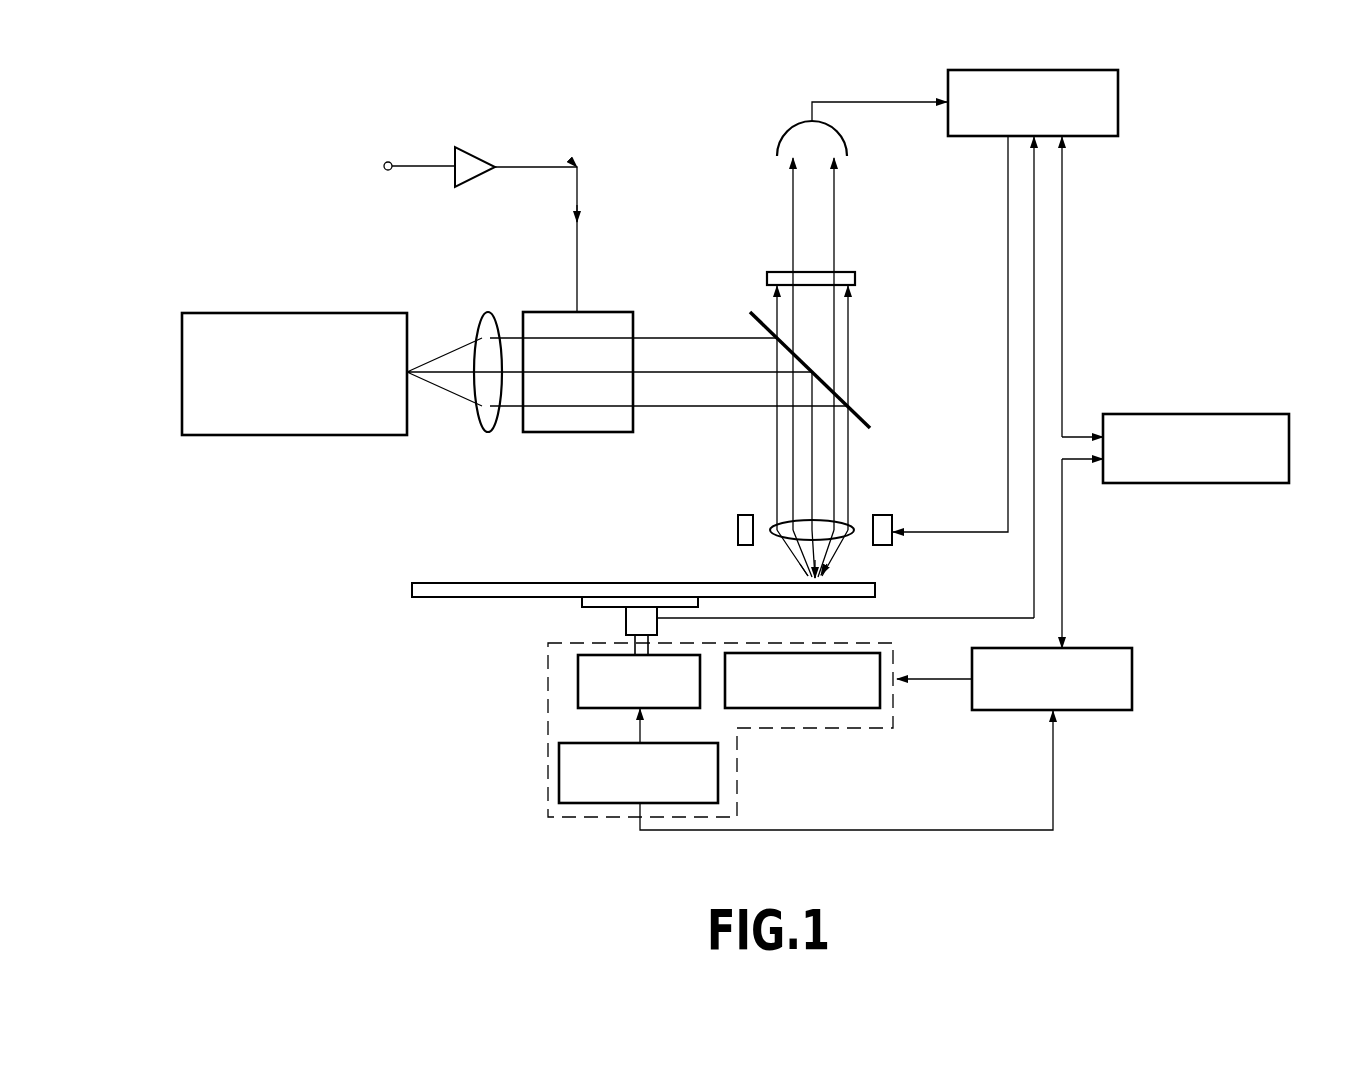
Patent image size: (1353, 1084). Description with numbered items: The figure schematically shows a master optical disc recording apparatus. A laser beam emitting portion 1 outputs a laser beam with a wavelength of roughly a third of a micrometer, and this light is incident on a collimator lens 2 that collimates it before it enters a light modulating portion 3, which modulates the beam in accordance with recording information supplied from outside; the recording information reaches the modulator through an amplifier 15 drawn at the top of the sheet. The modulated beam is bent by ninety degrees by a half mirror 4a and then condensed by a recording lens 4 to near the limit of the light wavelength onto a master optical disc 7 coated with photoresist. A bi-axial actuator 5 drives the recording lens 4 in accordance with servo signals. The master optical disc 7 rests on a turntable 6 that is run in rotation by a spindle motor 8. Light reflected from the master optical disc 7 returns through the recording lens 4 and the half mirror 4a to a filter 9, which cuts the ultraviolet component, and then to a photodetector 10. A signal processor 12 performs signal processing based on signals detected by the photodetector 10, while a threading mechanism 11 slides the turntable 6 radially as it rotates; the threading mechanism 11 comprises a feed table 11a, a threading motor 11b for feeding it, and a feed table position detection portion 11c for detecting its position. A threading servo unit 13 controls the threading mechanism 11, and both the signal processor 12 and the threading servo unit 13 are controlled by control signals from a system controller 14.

The laser beam emitting portion 1 is at (292, 313).
The collimator lens 2 is at (482, 313).
The light modulating portion 3 is at (548, 311).
The recording lens 4 is at (857, 522).
The half mirror 4a is at (867, 416).
The bi-axial actuator 5 is at (895, 515).
The turntable 6 is at (582, 600).
The master optical disc 7 is at (505, 583).
The spindle motor 8 is at (626, 622).
The filter 9 is at (847, 272).
The photodetector 10 is at (848, 150).
The threading mechanism 11 is at (749, 730).
The feed table 11a is at (578, 688).
The threading motor 11b is at (843, 708).
The feed table position detection portion 11c is at (559, 775).
The signal processor 12 is at (1120, 106).
The threading servo unit 13 is at (1132, 661).
The system controller 14 is at (1187, 414).
The amplifier 15 is at (472, 150).